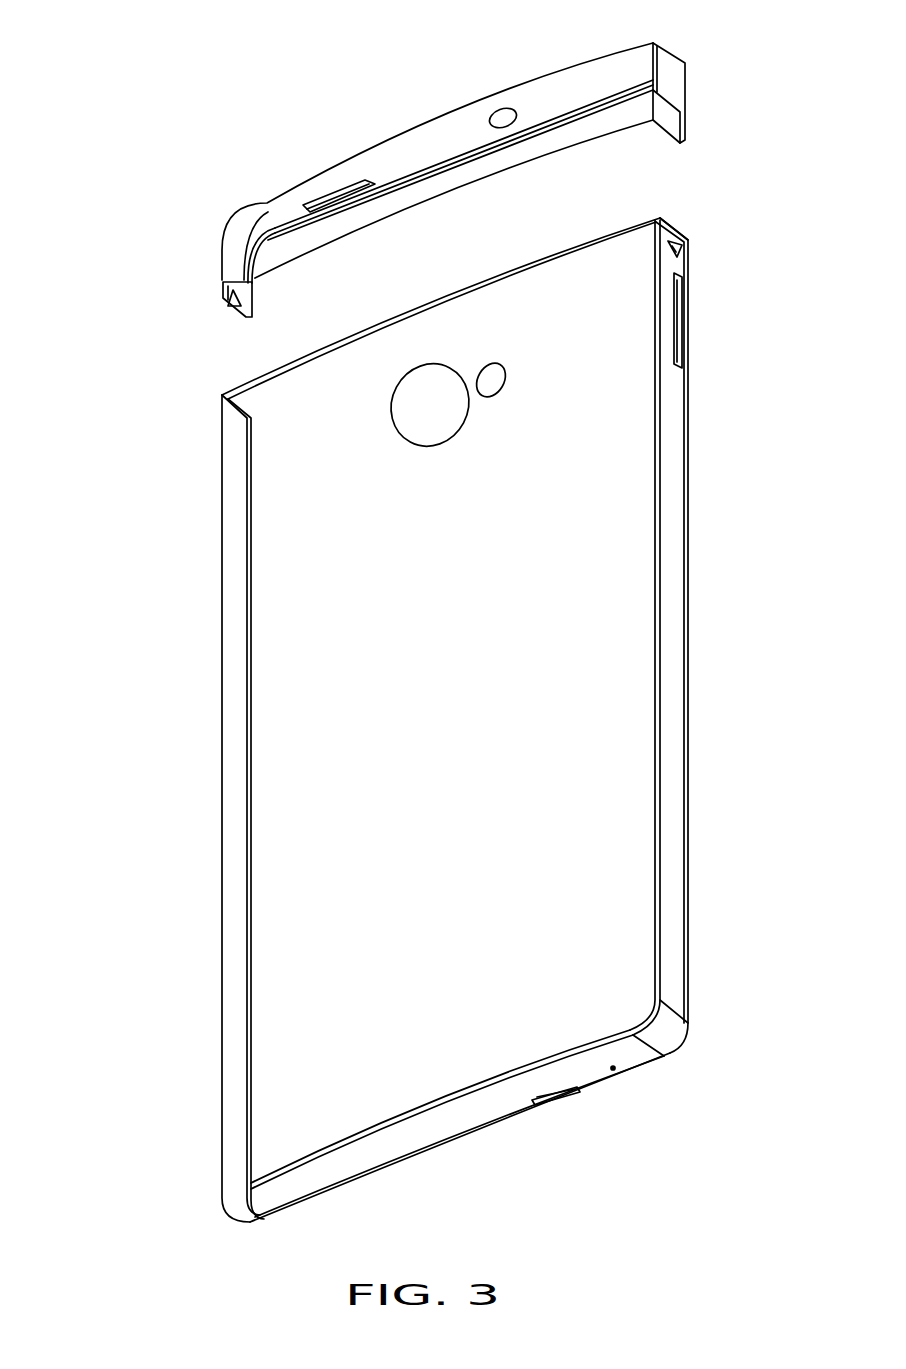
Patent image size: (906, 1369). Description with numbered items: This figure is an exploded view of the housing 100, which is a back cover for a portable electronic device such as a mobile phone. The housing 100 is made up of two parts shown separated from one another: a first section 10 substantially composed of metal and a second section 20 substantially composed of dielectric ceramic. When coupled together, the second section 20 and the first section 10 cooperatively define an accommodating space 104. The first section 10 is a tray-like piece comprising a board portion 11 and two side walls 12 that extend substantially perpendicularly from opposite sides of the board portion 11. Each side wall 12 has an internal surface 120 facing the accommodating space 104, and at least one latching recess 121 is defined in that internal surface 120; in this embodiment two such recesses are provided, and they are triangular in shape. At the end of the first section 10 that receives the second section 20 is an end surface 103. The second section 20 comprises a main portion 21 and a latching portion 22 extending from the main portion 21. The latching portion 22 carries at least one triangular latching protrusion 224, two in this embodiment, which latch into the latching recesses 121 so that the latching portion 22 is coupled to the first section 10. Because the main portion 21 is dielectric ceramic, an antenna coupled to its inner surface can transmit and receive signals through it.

The housing 100 is at (276, 43).
The first section 10 is at (205, 380).
The second section 20 is at (198, 243).
The main portion 21 is at (448, 135).
The latching portion 22 is at (423, 193).
The latching protrusion 224 is at (240, 298).
The board portion 11 is at (618, 403).
The side wall 12 is at (684, 497).
The accommodating space 104 is at (280, 768).
The end surface 103 is at (683, 240).
The latching recess 121 is at (677, 255).
The internal surface 120 is at (670, 578).